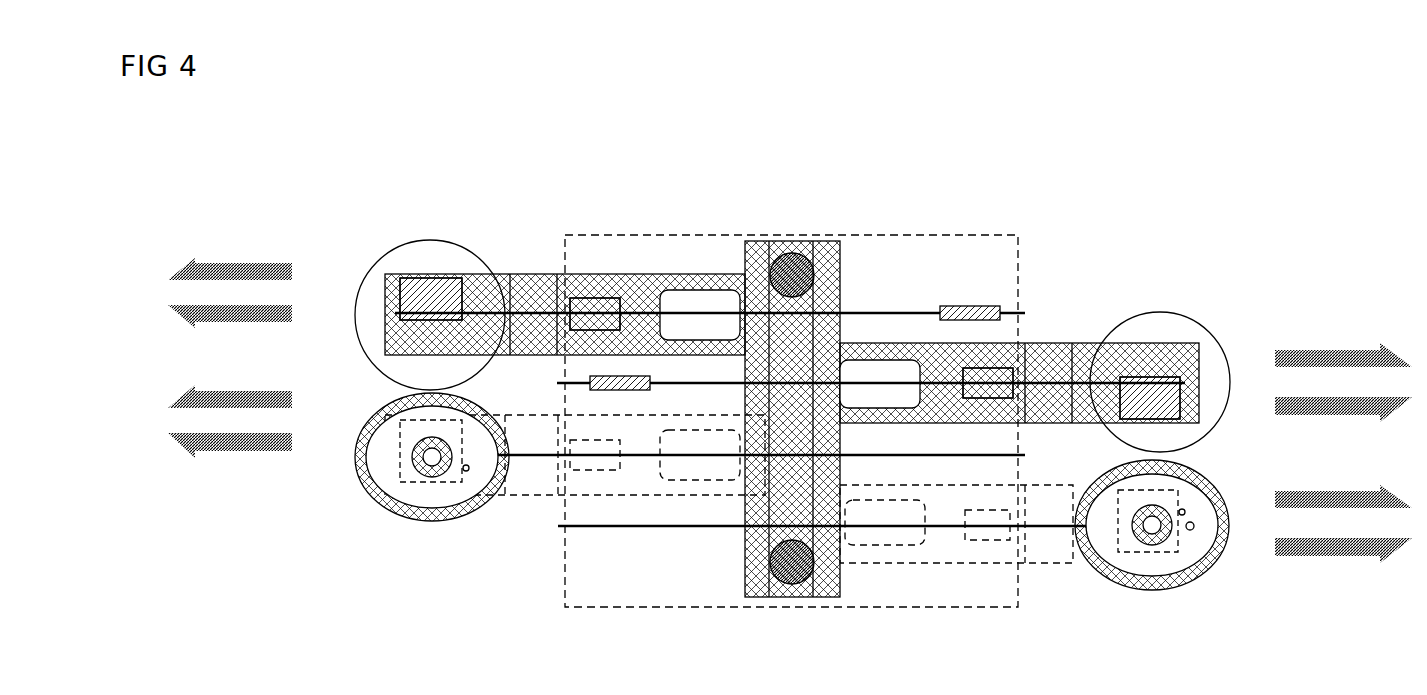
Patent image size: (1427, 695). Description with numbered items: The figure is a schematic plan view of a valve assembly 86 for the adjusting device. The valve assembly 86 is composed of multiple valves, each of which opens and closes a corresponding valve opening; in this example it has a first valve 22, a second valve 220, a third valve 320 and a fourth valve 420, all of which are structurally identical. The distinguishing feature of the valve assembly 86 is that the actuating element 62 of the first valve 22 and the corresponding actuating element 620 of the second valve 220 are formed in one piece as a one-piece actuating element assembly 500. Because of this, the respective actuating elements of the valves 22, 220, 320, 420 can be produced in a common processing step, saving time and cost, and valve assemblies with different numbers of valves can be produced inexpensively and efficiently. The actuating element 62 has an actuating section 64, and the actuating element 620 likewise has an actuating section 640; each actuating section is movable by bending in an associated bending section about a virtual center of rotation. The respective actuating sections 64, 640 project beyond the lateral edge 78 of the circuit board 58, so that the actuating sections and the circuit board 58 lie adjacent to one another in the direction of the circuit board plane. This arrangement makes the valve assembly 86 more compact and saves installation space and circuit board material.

The valve assembly 86 is at (768, 165).
The circuit board 58 is at (930, 235).
The one-piece actuating element assembly 500 is at (735, 405).
The actuating element 62 is at (635, 274).
The actuating section 64 is at (458, 278).
The first valve 22 is at (518, 240).
The actuating element 620 is at (1045, 343).
The actuating section 640 is at (1180, 340).
The second valve 220 is at (1155, 300).
The lateral edge 78 is at (560, 568).
The third valve 320 is at (395, 540).
The fourth valve 420 is at (1105, 592).